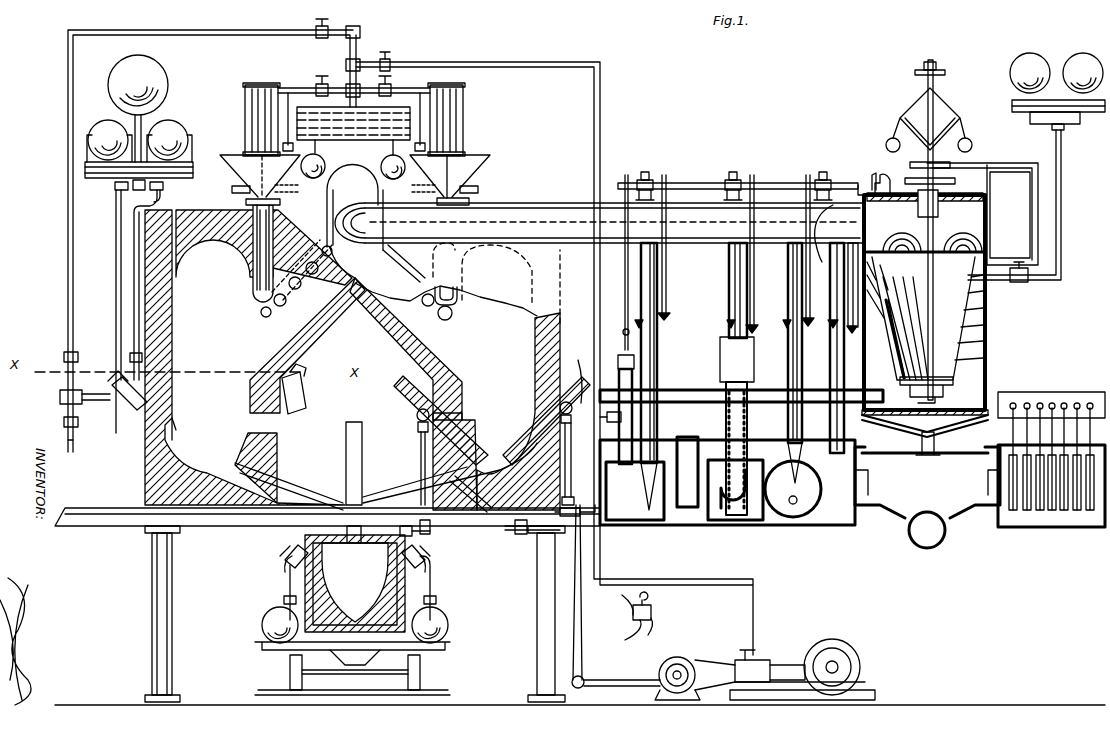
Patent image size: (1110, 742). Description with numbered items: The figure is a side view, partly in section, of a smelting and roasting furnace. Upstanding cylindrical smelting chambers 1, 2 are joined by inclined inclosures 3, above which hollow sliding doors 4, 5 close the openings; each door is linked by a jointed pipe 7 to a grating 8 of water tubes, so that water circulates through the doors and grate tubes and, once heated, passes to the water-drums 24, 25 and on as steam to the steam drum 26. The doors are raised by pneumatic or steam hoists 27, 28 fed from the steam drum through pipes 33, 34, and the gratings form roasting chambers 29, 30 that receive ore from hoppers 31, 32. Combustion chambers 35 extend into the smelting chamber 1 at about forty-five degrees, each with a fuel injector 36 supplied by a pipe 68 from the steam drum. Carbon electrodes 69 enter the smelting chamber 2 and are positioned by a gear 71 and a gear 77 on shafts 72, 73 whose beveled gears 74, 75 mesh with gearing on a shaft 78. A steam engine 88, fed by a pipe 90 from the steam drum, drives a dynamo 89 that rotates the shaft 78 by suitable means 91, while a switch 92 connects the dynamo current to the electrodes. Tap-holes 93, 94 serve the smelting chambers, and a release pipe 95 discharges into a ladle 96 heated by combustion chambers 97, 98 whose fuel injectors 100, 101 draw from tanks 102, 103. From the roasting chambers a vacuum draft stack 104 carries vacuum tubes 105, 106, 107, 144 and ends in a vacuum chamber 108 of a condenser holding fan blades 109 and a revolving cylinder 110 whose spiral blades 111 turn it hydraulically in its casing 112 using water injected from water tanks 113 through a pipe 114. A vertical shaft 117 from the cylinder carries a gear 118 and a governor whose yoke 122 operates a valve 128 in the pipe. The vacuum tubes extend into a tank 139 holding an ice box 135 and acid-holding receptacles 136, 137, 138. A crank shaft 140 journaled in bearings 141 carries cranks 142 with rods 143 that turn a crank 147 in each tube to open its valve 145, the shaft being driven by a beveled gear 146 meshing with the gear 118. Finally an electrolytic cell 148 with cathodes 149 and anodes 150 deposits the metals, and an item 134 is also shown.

The smelting chamber 1 is at (248, 357).
The smelting chamber 2 is at (496, 411).
The inclined inclosures 3 is at (290, 356).
The hollow sliding door 4 is at (256, 258).
The hollow sliding door 5 is at (457, 296).
The jointed pipe 7 is at (302, 264).
The grating 8 is at (301, 284).
The water-drum 24 is at (323, 164).
The water-drum 25 is at (386, 164).
The steam drum 26 is at (380, 128).
The pneumatic or steam hoist 27 is at (258, 118).
The pneumatic or steam hoist 28 is at (465, 115).
The roasting chamber 29 is at (258, 280).
The roasting chamber 30 is at (410, 256).
The hopper 31 is at (250, 163).
The hopper 32 is at (485, 170).
The pipe 33 is at (316, 90).
The pipe 34 is at (391, 90).
The combustion chambers 35 is at (170, 432).
The fuel injector 36 is at (147, 408).
The pipe 68 is at (200, 31).
The carbon electrodes 69 is at (520, 438).
The gear 71 is at (573, 407).
The shaft 72 is at (423, 467).
The shaft 73 is at (572, 470).
The beveled gear 74 is at (421, 530).
The beveled gear 75 is at (430, 530).
The gear 77 is at (570, 516).
The shaft 78 is at (521, 534).
The steam engine 88 is at (767, 660).
The dynamo 89 is at (680, 660).
The pipe 90 is at (507, 62).
The suitable means 91 is at (584, 603).
The switch 92 is at (652, 612).
The tap-hole 93 is at (305, 489).
The tap-hole 94 is at (470, 490).
The release pipe 95 is at (362, 458).
The ladle 96 is at (375, 613).
The combustion chamber 97 is at (305, 576).
The combustion chamber 98 is at (400, 578).
The fuel injector 100 is at (290, 564).
The fuel injector 101 is at (412, 566).
The tank 102 is at (262, 620).
The tank 103 is at (448, 623).
The vacuum draft stack 104 is at (598, 210).
The vacuum tube 105 is at (658, 284).
The vacuum tube 106 is at (732, 290).
The vacuum tube 107 is at (790, 293).
The vacuum chamber 108 is at (924, 302).
The fan blades 109 is at (893, 241).
The revolving cylinder 110 is at (923, 318).
The spiral blades 111 is at (918, 294).
The casing 112 is at (888, 340).
The water tanks 113 is at (1075, 52).
The pipe 114 is at (1058, 203).
The vertical shaft 117 is at (934, 175).
The gear 118 is at (963, 193).
The yoke 122 is at (975, 163).
The valve 128 is at (1021, 282).
The valve 134 is at (634, 366).
The ice box 135 is at (688, 507).
The acid-holding receptacle 136 is at (635, 491).
The acid-holding receptacle 137 is at (735, 490).
The acid-holding receptacle 138 is at (802, 512).
The tank 139 is at (845, 512).
The crank shaft 140 is at (700, 184).
The bearings 141 is at (645, 178).
The cranks 142 is at (666, 185).
The rod 143 is at (667, 265).
The vacuum tube 144 is at (843, 366).
The valve 145 is at (815, 230).
The beveled gear 146 is at (878, 186).
The crank 147 is at (848, 348).
The electrolytic cell 148 is at (1106, 520).
The cathodes 149 is at (1015, 515).
The anodes 150 is at (1052, 512).